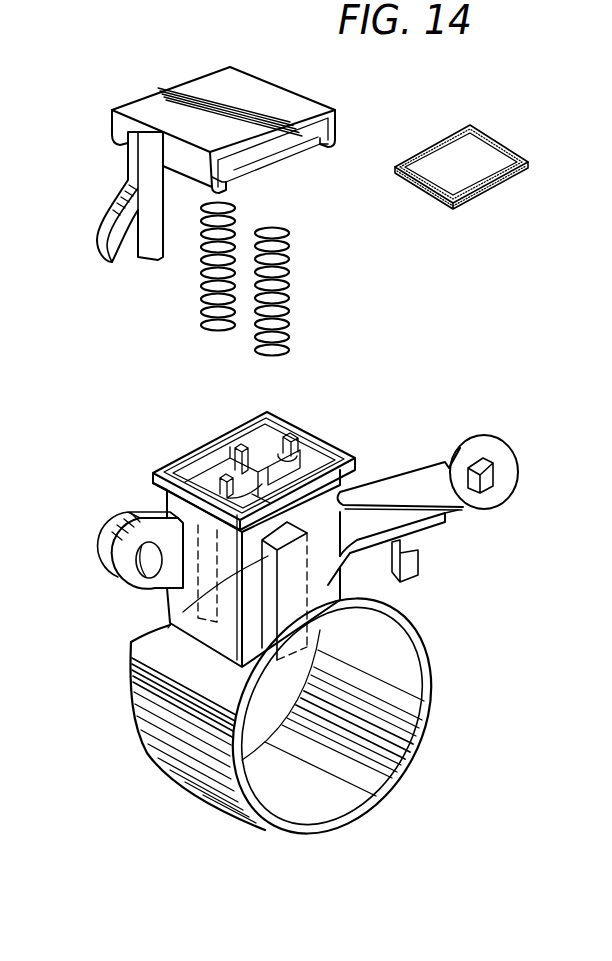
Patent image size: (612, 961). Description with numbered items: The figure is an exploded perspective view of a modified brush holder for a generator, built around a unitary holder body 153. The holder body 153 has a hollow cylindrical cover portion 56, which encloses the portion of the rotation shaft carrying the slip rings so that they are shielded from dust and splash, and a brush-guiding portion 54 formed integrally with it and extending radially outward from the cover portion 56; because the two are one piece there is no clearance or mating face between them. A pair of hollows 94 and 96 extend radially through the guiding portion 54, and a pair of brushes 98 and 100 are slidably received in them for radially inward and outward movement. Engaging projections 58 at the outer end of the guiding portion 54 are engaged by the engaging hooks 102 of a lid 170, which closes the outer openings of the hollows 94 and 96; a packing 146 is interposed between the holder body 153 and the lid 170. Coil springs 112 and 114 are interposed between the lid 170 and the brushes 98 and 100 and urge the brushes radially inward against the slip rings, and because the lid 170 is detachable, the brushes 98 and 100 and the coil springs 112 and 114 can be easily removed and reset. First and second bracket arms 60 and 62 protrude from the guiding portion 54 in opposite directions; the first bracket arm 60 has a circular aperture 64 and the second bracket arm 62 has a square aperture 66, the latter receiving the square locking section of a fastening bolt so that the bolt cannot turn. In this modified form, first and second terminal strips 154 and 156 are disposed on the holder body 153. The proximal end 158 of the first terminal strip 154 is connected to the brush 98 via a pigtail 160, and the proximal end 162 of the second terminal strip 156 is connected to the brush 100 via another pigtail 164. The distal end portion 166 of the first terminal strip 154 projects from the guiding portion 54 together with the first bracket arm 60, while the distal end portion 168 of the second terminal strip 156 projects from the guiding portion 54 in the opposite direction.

The lid 170 is at (287, 100).
The engaging hooks 102 is at (226, 180).
The coil spring 114 is at (200, 291).
The coil spring 112 is at (293, 277).
The packing 146 is at (473, 198).
The pigtail 164 is at (262, 445).
The hollow 96 is at (220, 462).
The proximal end of second terminal strip 162 is at (292, 443).
The hollow 94 is at (328, 445).
The engaging projections 58 is at (350, 468).
The second bracket arm 62 is at (402, 503).
The square aperture 66 is at (490, 474).
The proximal end of first terminal strip 158 is at (172, 503).
The first terminal strip 154 is at (131, 530).
The distal end portion of first terminal strip 166 is at (104, 542).
The first bracket arm 60 is at (126, 578).
The circular aperture 64 is at (146, 570).
The pigtail 160 is at (180, 606).
The brush-guiding portion 54 is at (336, 563).
The second terminal strip 156 is at (418, 535).
The distal end portion of second terminal strip 168 is at (418, 567).
The brush 98 is at (290, 605).
The holder body 153 is at (127, 680).
The brush 100 is at (200, 640).
The cylindrical cover portion 56 is at (203, 793).